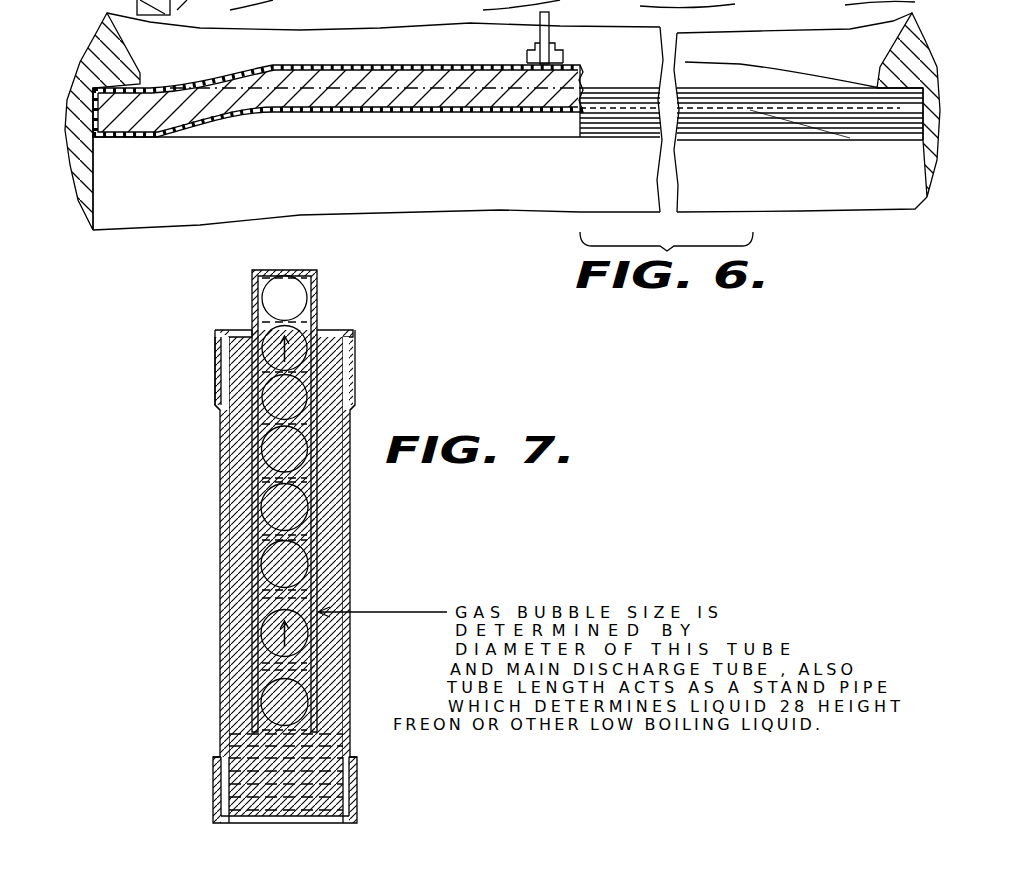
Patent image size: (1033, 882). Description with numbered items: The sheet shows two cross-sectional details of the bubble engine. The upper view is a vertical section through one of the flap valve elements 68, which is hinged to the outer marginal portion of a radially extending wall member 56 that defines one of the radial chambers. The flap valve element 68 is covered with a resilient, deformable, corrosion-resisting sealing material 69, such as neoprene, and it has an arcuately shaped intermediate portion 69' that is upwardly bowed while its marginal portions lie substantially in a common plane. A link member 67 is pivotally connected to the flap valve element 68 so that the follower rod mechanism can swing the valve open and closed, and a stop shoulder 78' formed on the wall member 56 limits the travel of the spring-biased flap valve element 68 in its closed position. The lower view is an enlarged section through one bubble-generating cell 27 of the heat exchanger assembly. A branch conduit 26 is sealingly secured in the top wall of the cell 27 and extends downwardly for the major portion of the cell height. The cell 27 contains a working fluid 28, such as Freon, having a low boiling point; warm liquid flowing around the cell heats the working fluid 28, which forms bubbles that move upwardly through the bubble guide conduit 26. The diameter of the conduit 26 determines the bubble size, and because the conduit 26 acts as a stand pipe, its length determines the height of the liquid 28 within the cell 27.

In FIG. 7, the branch conduit 26 is at (317, 530).
In FIG. 7, the bubble-generating cell 27 is at (350, 573).
In FIG. 7, the working fluid 28 is at (245, 776).
In FIG. 6, the radially extending wall member 56 is at (78, 193).
In FIG. 6, the link member 67 is at (544, 35).
In FIG. 6, the flap valve element 68 is at (267, 138).
In FIG. 6, the sealing material 69 is at (338, 84).
In FIG. 6, the arcuately shaped intermediate portion 69' is at (339, 81).
In FIG. 6, the stop shoulder 78' is at (128, 121).